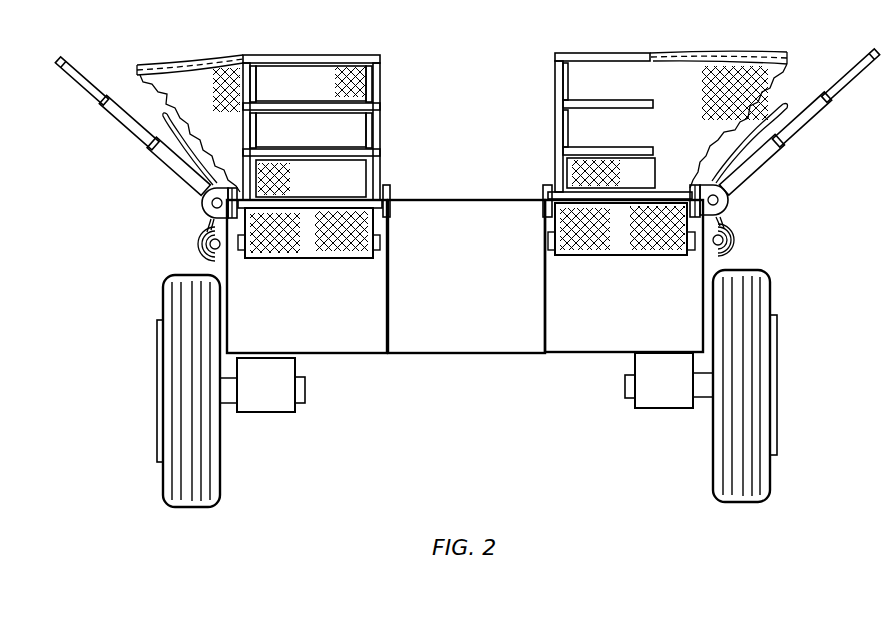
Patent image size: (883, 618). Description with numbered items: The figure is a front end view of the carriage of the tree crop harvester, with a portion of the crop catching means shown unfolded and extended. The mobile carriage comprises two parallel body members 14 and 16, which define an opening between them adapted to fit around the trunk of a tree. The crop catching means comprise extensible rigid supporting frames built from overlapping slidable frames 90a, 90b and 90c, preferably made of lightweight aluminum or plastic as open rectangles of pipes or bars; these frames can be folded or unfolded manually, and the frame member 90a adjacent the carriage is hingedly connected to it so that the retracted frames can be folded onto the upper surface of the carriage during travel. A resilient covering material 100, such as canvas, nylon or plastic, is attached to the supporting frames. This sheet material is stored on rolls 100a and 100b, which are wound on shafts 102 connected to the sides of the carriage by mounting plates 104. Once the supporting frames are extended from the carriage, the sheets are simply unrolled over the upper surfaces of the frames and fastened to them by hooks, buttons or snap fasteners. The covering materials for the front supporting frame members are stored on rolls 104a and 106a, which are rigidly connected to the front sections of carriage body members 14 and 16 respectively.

The body member 14 is at (588, 316).
The body member 16 is at (291, 318).
The slidable frame 90a is at (178, 166).
The slidable frame 90b is at (129, 122).
The slidable frame 90c is at (85, 88).
The resilient covering material 100 is at (784, 100).
The roll 100a is at (197, 243).
The roll 100b is at (732, 236).
The shaft 102 is at (166, 80).
The mounting plate 104 is at (205, 216).
The roll 104a is at (633, 253).
The roll 106a is at (333, 258).